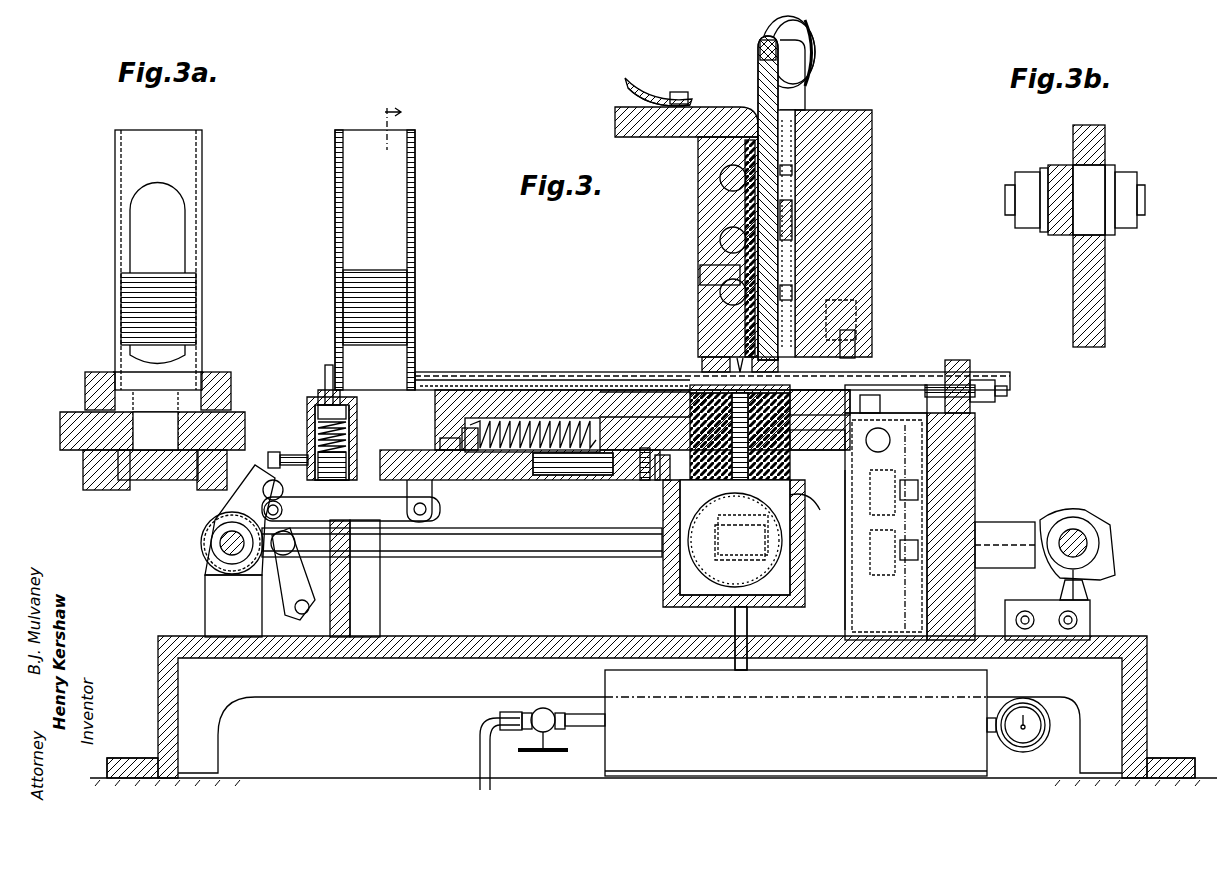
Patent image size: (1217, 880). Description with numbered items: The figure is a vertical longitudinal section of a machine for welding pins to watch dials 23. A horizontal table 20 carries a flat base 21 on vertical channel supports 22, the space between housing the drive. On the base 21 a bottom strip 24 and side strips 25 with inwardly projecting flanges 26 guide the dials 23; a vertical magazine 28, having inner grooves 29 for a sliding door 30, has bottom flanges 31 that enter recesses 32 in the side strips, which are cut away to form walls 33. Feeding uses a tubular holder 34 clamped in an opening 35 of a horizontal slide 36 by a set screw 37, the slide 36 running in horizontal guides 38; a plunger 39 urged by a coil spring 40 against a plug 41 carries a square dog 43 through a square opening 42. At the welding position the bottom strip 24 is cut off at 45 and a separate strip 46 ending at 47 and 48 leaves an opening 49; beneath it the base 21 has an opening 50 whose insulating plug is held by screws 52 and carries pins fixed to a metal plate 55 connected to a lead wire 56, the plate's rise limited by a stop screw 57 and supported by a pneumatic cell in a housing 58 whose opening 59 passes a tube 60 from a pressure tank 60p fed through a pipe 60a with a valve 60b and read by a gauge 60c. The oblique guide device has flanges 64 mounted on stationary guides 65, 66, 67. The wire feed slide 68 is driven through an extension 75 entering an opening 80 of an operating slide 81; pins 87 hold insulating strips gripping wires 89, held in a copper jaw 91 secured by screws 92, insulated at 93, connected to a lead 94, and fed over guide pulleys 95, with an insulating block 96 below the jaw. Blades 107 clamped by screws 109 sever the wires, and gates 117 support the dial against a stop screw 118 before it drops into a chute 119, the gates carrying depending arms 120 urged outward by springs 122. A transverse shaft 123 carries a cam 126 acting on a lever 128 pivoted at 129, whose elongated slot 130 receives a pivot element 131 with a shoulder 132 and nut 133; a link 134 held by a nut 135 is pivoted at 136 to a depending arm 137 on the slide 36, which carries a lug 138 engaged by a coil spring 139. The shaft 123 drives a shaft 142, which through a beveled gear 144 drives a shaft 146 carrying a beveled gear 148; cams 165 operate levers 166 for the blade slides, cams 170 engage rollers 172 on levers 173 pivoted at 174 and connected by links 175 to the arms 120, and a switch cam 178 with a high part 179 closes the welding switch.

In FIG. 3, the horizontal table 20 is at (1150, 690).
In FIG. 3A, the horizontal flat base 21 is at (62, 428).
In FIG. 3, the horizontal flat base 21 is at (975, 445).
In FIG. 3, the vertical channel supports 22 is at (380, 612).
In FIG. 3, the dials 23 is at (490, 372).
In FIG. 3A, the bottom strip 24 is at (88, 382).
In FIG. 3, the bottom strip 24 is at (600, 388).
In FIG. 3A, the side strips 25 is at (110, 375).
In FIG. 3, the side strips 25 is at (455, 372).
In FIG. 3A, the upper inwardly projecting flanges 26 is at (128, 358).
In FIG. 3A, the vertical magazine 28 is at (116, 272).
In FIG. 3, the vertical magazine 28 is at (335, 240).
In FIG. 3A, the inner grooves 29 is at (215, 380).
In FIG. 3A, the sliding door 30 is at (205, 360).
In FIG. 3, the sliding door 30 is at (262, 367).
In FIG. 3A, the outwardly projecting flanges 31 is at (88, 412).
In FIG. 3, the longitudinal recesses 32 is at (268, 482).
In FIG. 3, the walls 33 is at (295, 543).
In FIG. 3, the tubular holder 34 is at (308, 428).
In FIG. 3, the opening 35 is at (358, 460).
In FIG. 3A, the horizontal slide 36 is at (160, 480).
In FIG. 3, the horizontal slide 36 is at (510, 482).
In FIG. 3, the set screw 37 is at (283, 452).
In FIG. 3A, the horizontal guides 38 is at (105, 490).
In FIG. 3, the horizontal guides 38 is at (580, 482).
In FIG. 3, the plunger 39 is at (318, 412).
In FIG. 3, the compressible coil spring 40 is at (350, 440).
In FIG. 3, the plug 41 is at (351, 499).
In FIG. 3, the opening 42 is at (326, 392).
In FIG. 3, the vertical dog 43 is at (327, 375).
In FIG. 3, the cut-off wall 45 is at (645, 399).
In FIG. 3, the separate bottom strip 46 is at (828, 392).
In FIG. 3, the terminal wall 47 is at (810, 398).
In FIG. 3, the edge 48 is at (762, 436).
In FIG. 3, the opening 49 is at (688, 387).
In FIG. 3, the opening 50 is at (645, 418).
In FIG. 3, the screws 52 is at (817, 441).
In FIG. 3, the metal plate 55 is at (665, 480).
In FIG. 3, the flexible lead wire 56 is at (814, 509).
In FIG. 3, the adjustable stop screw 57 is at (670, 580).
In FIG. 3, the stationary housing 58 is at (668, 593).
In FIG. 3, the opening 59 is at (764, 604).
In FIG. 3, the tube 60 is at (748, 624).
In FIG. 3, the pipe 60a is at (520, 705).
In FIG. 3, the valve 60b is at (552, 712).
In FIG. 3, the gauge 60c is at (1012, 750).
In FIG. 3, the pressure tank 60p is at (785, 745).
In FIG. 3, the flanges 64 is at (856, 308).
In FIG. 3, the stationary guide 65 is at (640, 372).
In FIG. 3, the stationary guide 66 is at (870, 340).
In FIG. 3, the stationary guide 67 is at (962, 360).
In FIG. 3, the slide 68 is at (705, 265).
In FIG. 3, the tail or extension 75 is at (792, 225).
In FIG. 3, the opening 80 is at (1085, 592).
In FIG. 3, the operating slide 81 is at (872, 193).
In FIG. 3, the pins 87 is at (792, 170).
In FIG. 3, the wires 89 is at (812, 30).
In FIG. 3, the jaw 91 is at (616, 125).
In FIG. 3, the screws 92 is at (720, 180).
In FIG. 3, the insulation 93 is at (745, 205).
In FIG. 3, the flexible lead 94 is at (622, 80).
In FIG. 3, the grooved guide pulleys 95 is at (760, 40).
In FIG. 3, the insulating bar or block 96 is at (735, 320).
In FIG. 3, the horizontal blades 107 is at (705, 368).
In FIG. 3, the clamping screws 109 is at (710, 360).
In FIG. 3, the reciprocatory gates 117 is at (870, 375).
In FIG. 3, the stop screw 118 is at (1000, 384).
In FIG. 3, the chute 119 is at (830, 550).
In FIG. 3, the depending arms 120 is at (950, 460).
In FIG. 3, the springs 122 is at (988, 428).
In FIG. 3, the transverse shaft 123 is at (222, 550).
In FIG. 3, the cam 126 is at (212, 540).
In FIG. 3B, the vertically swinging lever 128 is at (1105, 332).
In FIG. 3, the vertically swinging lever 128 is at (318, 600).
In FIG. 3, the pivot 129 is at (308, 607).
In FIG. 3B, the elongated slot 130 is at (1088, 230).
In FIG. 3, the elongated slot 130 is at (258, 512).
In FIG. 3B, the pivot element 131 is at (1090, 198).
In FIG. 3B, the shoulder 132 is at (1065, 180).
In FIG. 3B, the nut 133 is at (1128, 205).
In FIG. 3B, the link 134 is at (1048, 230).
In FIG. 3, the link 134 is at (405, 539).
In FIG. 3B, the nut 135 is at (1025, 222).
In FIG. 3, the nut 135 is at (283, 510).
In FIG. 3, the pivotal connection 136 is at (455, 518).
In FIG. 3, the depending arm 137 is at (439, 501).
In FIG. 3, the upstanding lug 138 is at (460, 451).
In FIG. 3, the compressible coil spring 139 is at (520, 422).
In FIG. 3, the shaft 142 is at (540, 557).
In FIG. 3, the beveled gear 144 is at (1045, 605).
In FIG. 3, the shaft 146 is at (1090, 543).
In FIG. 3, the beveled gear 148 is at (980, 520).
In FIG. 3, the cams 165 is at (730, 520).
In FIG. 3, the levers 166 is at (641, 511).
In FIG. 3, the cams 170 is at (875, 536).
In FIG. 3, the rollers 172 is at (985, 430).
In FIG. 3, the levers 173 is at (920, 548).
In FIG. 3, the pivot 174 is at (880, 527).
In FIG. 3, the links 175 is at (918, 485).
In FIG. 3, the switch cam 178 is at (1100, 525).
In FIG. 3, the high part 179 is at (1095, 585).